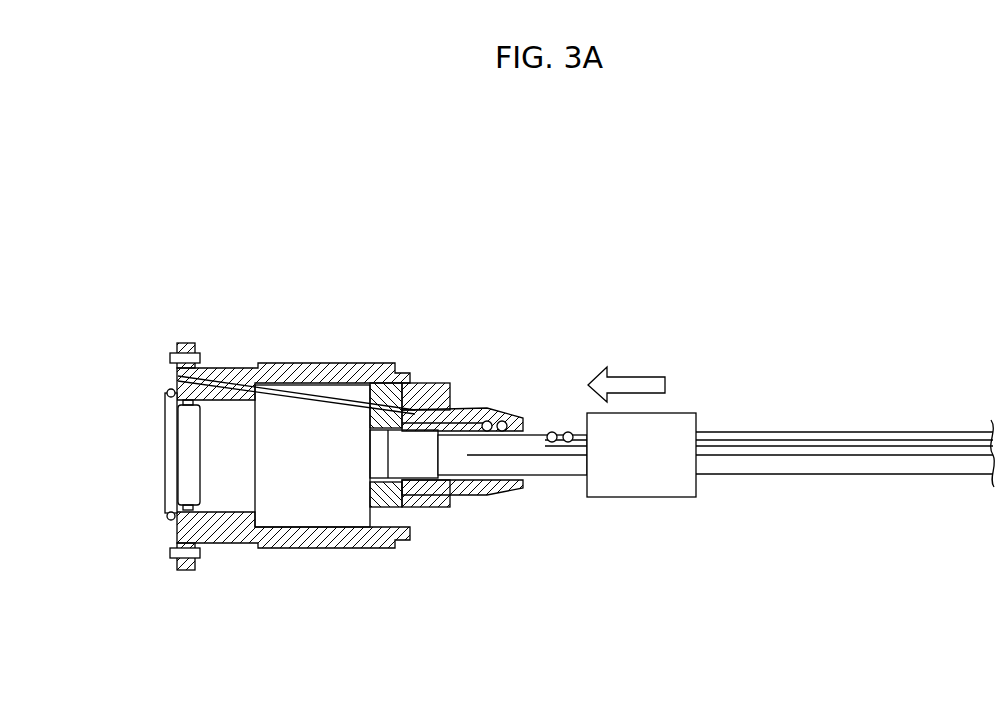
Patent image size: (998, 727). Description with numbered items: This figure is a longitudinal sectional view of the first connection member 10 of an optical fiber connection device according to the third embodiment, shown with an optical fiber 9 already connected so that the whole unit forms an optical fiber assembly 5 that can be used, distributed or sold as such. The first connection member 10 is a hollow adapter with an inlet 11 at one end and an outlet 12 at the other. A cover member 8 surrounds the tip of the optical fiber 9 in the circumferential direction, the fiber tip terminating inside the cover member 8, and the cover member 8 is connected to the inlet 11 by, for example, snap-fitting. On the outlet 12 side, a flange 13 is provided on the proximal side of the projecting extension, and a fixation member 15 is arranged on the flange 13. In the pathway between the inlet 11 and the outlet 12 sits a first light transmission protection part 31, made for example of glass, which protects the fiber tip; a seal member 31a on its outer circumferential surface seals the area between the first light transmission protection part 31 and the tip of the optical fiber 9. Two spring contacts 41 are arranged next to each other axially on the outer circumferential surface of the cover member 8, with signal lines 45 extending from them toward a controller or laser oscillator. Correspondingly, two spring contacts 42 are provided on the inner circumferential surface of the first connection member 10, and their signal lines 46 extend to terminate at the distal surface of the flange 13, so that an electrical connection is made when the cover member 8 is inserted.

The optical fiber assembly 5 is at (690, 298).
The cover member 8 is at (567, 470).
The optical fiber 9 is at (828, 475).
The first connection member 10 is at (523, 265).
The inlet 11 is at (525, 425).
The outlet 12 is at (165, 441).
The flange 13 is at (187, 343).
The fixation member 15 is at (200, 348).
The first light transmission protection part 31 is at (193, 467).
The seal member 31a is at (215, 512).
The spring contacts 41 is at (565, 443).
The spring contacts 42 is at (487, 420).
The signal lines 45 is at (883, 438).
The signal lines 46 is at (332, 397).